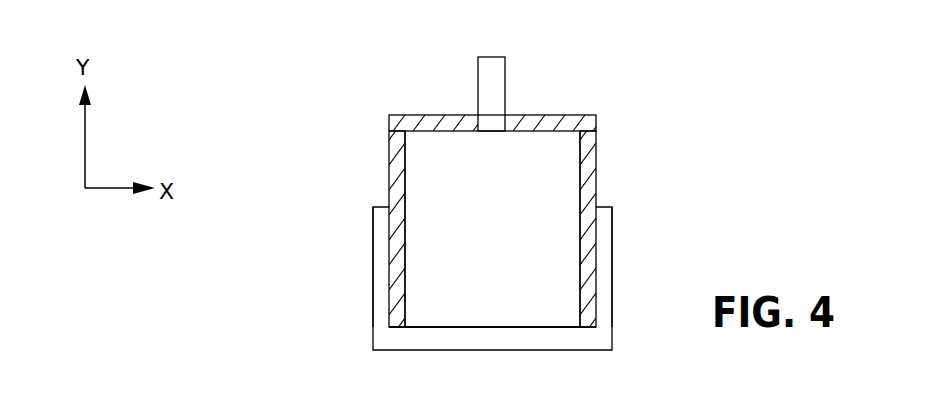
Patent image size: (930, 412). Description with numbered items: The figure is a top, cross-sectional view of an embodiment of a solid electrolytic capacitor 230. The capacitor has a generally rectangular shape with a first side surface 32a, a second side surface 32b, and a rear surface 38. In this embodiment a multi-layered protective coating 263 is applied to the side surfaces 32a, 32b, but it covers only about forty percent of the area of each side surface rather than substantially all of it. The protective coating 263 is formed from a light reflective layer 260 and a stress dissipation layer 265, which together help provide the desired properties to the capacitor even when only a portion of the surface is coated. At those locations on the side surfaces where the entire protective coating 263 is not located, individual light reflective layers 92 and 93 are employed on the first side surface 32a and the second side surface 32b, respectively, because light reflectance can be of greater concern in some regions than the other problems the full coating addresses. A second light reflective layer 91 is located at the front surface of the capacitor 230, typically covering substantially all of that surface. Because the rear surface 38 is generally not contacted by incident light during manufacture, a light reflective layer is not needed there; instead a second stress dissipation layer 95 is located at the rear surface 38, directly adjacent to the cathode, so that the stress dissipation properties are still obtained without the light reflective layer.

The capacitor 230 is at (250, 127).
The second light reflective layer 91 is at (550, 120).
The light reflective layer 92 is at (598, 157).
The light reflective layer 93 is at (387, 170).
The second stress dissipation layer 95 is at (459, 342).
The rear surface 38 is at (460, 323).
The first side surface 32a is at (580, 237).
The second side surface 32b is at (407, 232).
The protective coating 263 is at (340, 220).
The stress dissipation layer 265 is at (382, 257).
The light reflective layer 260 is at (395, 293).